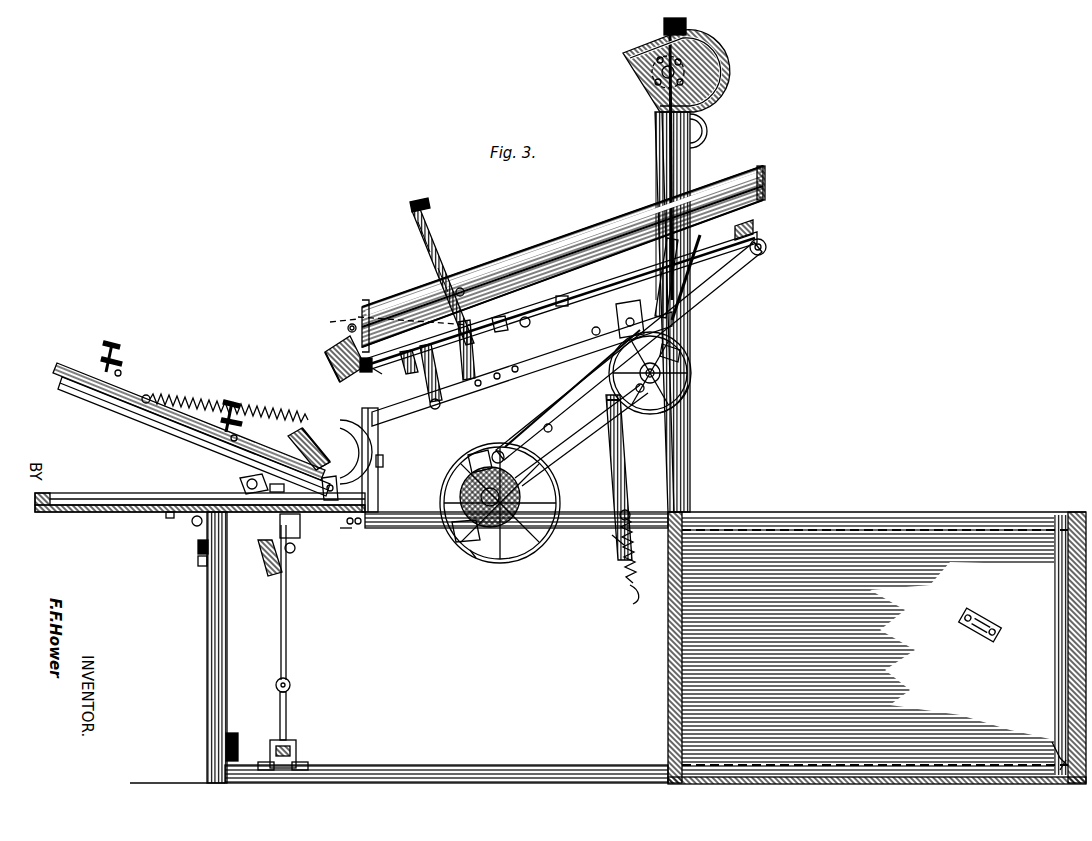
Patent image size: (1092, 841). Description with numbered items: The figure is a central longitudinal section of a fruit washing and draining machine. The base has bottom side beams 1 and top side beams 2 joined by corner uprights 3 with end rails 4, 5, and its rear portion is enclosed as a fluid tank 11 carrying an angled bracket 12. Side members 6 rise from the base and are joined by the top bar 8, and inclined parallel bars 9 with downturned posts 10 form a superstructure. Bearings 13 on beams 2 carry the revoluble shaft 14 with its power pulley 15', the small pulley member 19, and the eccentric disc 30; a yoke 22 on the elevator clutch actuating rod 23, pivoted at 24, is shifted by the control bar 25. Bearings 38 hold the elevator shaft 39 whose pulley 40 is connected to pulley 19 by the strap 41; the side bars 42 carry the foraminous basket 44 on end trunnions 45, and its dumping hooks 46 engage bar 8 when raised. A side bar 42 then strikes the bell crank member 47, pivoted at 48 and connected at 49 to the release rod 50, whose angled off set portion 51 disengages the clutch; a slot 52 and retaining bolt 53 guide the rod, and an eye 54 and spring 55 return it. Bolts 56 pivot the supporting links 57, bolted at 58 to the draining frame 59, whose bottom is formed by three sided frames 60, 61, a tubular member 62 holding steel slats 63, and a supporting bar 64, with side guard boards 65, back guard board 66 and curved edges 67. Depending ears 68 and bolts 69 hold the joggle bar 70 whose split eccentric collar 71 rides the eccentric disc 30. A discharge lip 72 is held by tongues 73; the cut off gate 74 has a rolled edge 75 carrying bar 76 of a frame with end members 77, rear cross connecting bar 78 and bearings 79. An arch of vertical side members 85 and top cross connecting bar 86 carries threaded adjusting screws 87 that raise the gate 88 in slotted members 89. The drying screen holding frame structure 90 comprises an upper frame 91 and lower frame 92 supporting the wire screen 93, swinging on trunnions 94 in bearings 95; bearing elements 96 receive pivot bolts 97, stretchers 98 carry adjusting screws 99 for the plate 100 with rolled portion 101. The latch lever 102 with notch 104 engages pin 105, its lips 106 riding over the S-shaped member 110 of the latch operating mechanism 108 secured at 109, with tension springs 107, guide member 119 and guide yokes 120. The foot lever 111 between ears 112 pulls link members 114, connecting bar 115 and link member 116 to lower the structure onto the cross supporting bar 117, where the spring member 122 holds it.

The bottom side beams 1 is at (551, 770).
The top side beams 2 is at (425, 530).
The uprights 3 is at (207, 678).
The end rail 4 is at (1076, 516).
The end rail 5 is at (1057, 757).
The side members 6 is at (687, 196).
The top bar 8 is at (657, 140).
The parallel bars 9 is at (568, 362).
The vertical posts 10 is at (378, 493).
The fluid tank 11 is at (868, 545).
The angled bracket 12 is at (984, 627).
The bearings 13 is at (460, 540).
The revoluble shaft 14 is at (498, 560).
The power pulley 15' is at (460, 569).
The pulley member 19 is at (543, 434).
The yoke 22 is at (478, 456).
The elevator clutch actuating rod 23 is at (577, 446).
The pivot 24 is at (692, 376).
The control bar 25 is at (597, 470).
The eccentric disc 30 is at (460, 489).
The bearings 38 is at (680, 355).
The elevator shaft 39 is at (631, 379).
The pulley 40 is at (692, 393).
The strap 41 is at (576, 388).
The side bars 42 is at (664, 28).
The foraminous basket 44 is at (712, 82).
The end trunnions 45 is at (654, 84).
The dumping hooks 46 is at (704, 142).
The bell crank member 47 is at (628, 306).
The pivot 48 is at (626, 322).
The pivotal connection 49 is at (592, 330).
The release rod 50 is at (622, 490).
The angled off set portion 51 is at (620, 446).
The slot 52 is at (615, 540).
The retaining bolt 53 is at (629, 514).
The eye 54 is at (626, 599).
The spring 55 is at (637, 558).
The bolts 56 is at (434, 412).
The supporting links 57 is at (680, 285).
The bolts 58 is at (676, 300).
The draining frame 59 is at (500, 262).
The three sided frame 60 is at (766, 208).
The three sided frame 61 is at (758, 234).
The tubular member 62 is at (364, 372).
The steel slats 63 is at (560, 306).
The supporting bar 64 is at (597, 288).
The side guard boards 65 is at (767, 180).
The back guard board 66 is at (589, 230).
The curved front edges 67 is at (364, 300).
The depending ears 68 is at (767, 247).
The bolts 69 is at (764, 253).
The joggle bar 70 is at (731, 267).
The split eccentric collar 71 is at (497, 451).
The discharge lip 72 is at (332, 372).
The tongues 73 is at (380, 374).
The cut off gate 74 is at (332, 352).
The rolled edge 75 is at (349, 329).
The bar 76 is at (349, 324).
The end members 77 is at (384, 316).
The rear cross connecting bar 78 is at (500, 331).
The bearings 79 is at (527, 327).
The vertical side members 85 is at (445, 250).
The top cross connecting bar 86 is at (430, 210).
The threaded adjusting screws 87 is at (430, 247).
The gate 88 is at (444, 273).
The slotted members 89 is at (460, 286).
The drying screen holding frame structure 90 is at (125, 513).
The upper frame 91 is at (133, 398).
The lower frame 92 is at (170, 518).
The wire screen 93 is at (120, 495).
The trunnions 94 is at (192, 526).
The bearings 95 is at (198, 548).
The bearing element 96 is at (346, 526).
The pivot bolts 97 is at (330, 478).
The stretchers 98 is at (132, 368).
The adjusting screws 99 is at (112, 344).
The plate 100 is at (172, 420).
The rolled portion 101 is at (338, 453).
The latch lever 102 is at (292, 444).
The notch 104 is at (246, 481).
The pin 105 is at (318, 470).
The lips 106 is at (320, 443).
The tension springs 107 is at (213, 388).
The latch operating mechanisms 108 is at (347, 446).
The securing point 109 is at (383, 462).
The S-shaped member 110 is at (277, 491).
The foot lever 111 is at (298, 752).
The ears 112 is at (238, 744).
The link member 114 is at (287, 640).
The connecting bar 115 is at (290, 680).
The link member 116 is at (290, 706).
The cross supporting bar 117 is at (350, 530).
The guide member 119 is at (265, 560).
The guide yokes 120 is at (292, 545).
The spring member 122 is at (200, 566).